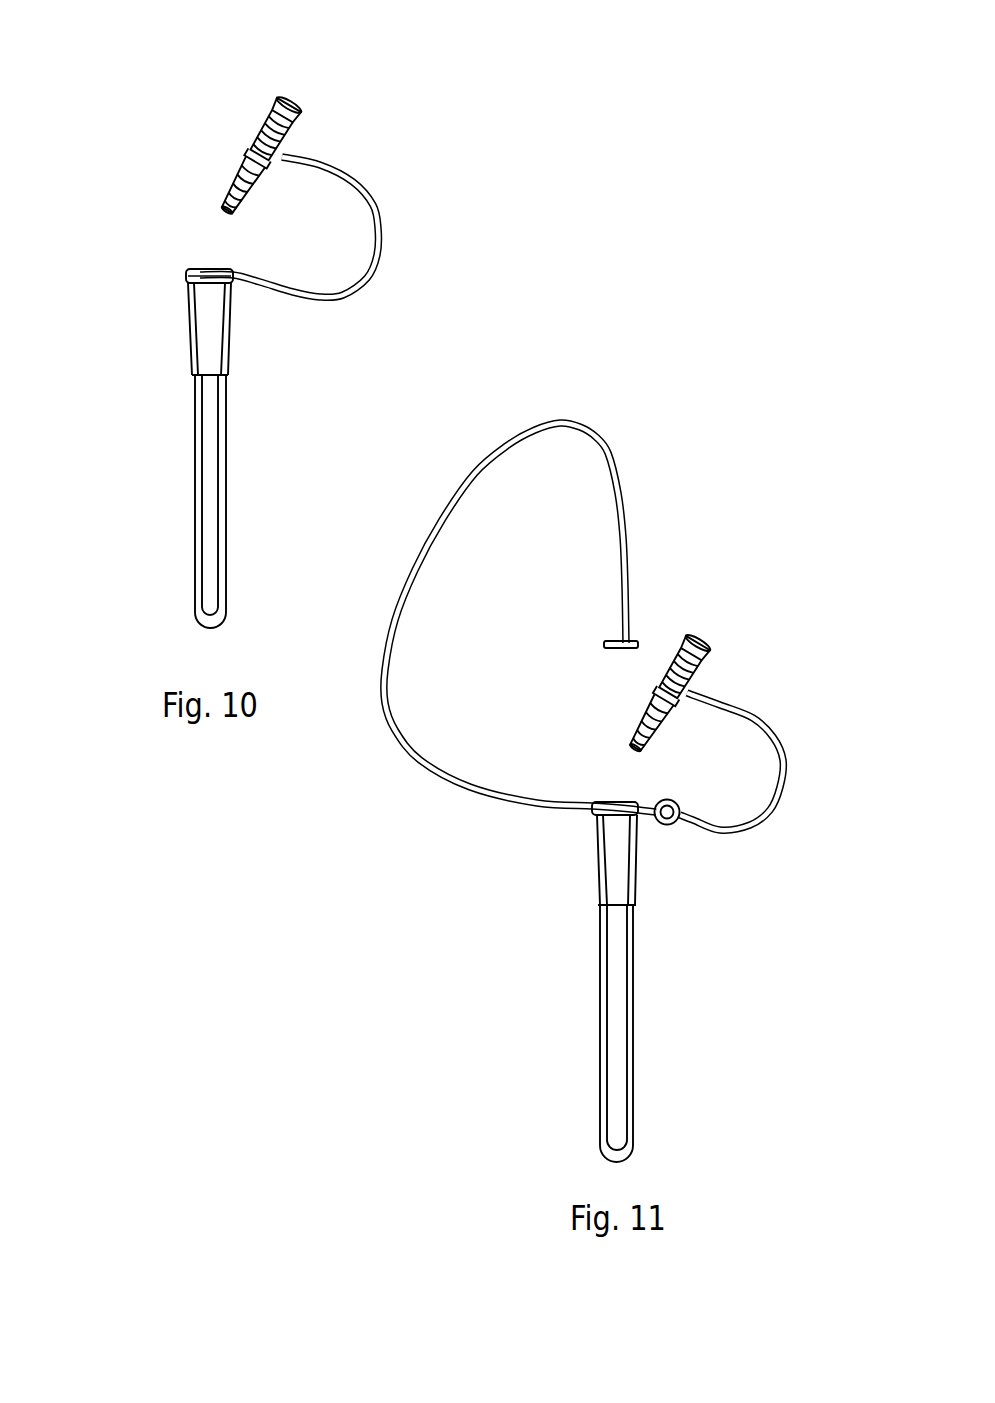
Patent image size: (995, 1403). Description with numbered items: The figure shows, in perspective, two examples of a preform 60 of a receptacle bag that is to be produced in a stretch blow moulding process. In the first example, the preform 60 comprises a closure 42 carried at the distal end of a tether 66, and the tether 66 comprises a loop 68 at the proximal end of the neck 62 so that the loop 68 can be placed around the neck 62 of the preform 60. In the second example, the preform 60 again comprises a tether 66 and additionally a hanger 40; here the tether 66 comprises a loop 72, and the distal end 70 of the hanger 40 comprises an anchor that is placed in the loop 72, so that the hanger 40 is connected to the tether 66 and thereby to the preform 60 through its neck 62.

In FIG. 11, the hanger 40 is at (479, 662).
In FIG. 10, the closure 42 is at (353, 141).
In FIG. 10, the preform 60 is at (96, 457).
In FIG. 11, the preform 60 is at (452, 970).
In FIG. 10, the neck 62 is at (256, 455).
In FIG. 11, the neck 62 is at (647, 982).
In FIG. 10, the tether 66 is at (388, 227).
In FIG. 11, the tether 66 is at (776, 715).
In FIG. 10, the loop 68 is at (130, 344).
In FIG. 11, the distal end 70 is at (685, 589).
In FIG. 11, the loop 72 is at (709, 893).